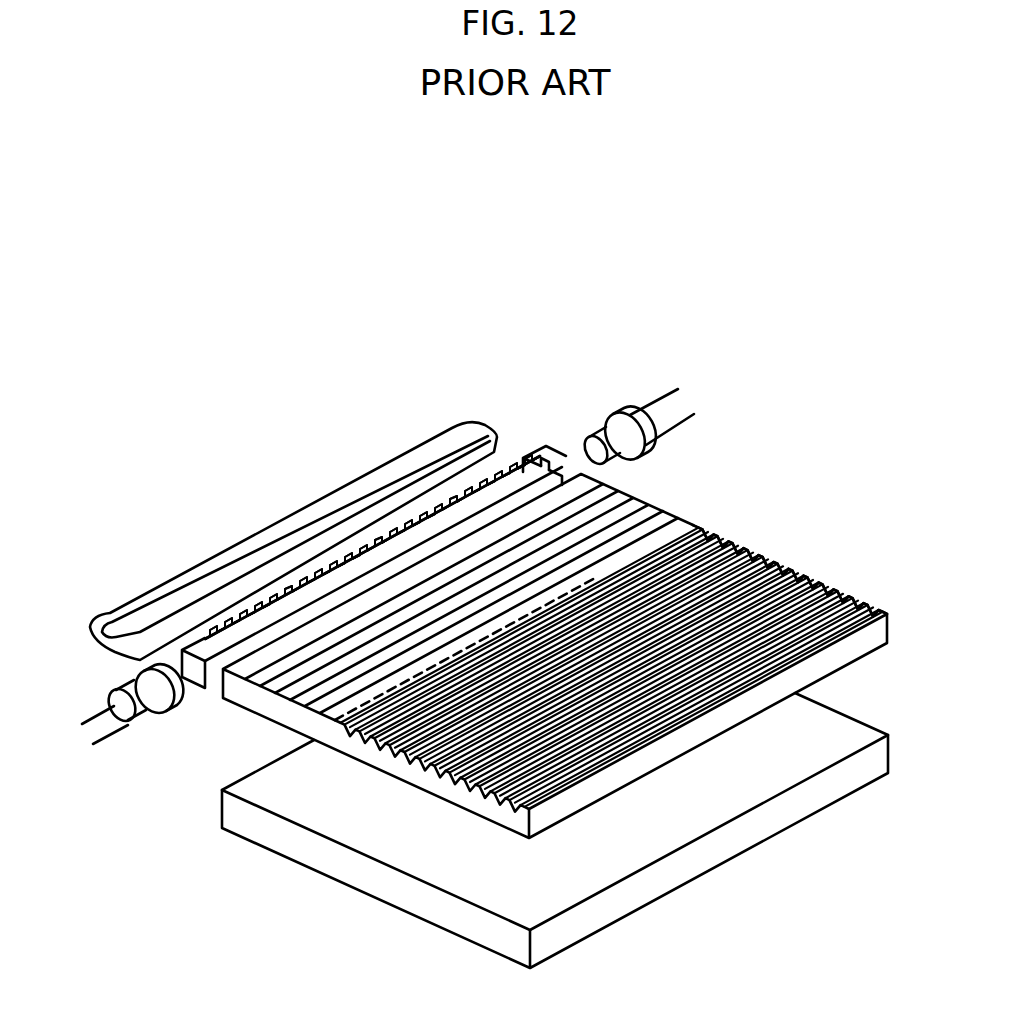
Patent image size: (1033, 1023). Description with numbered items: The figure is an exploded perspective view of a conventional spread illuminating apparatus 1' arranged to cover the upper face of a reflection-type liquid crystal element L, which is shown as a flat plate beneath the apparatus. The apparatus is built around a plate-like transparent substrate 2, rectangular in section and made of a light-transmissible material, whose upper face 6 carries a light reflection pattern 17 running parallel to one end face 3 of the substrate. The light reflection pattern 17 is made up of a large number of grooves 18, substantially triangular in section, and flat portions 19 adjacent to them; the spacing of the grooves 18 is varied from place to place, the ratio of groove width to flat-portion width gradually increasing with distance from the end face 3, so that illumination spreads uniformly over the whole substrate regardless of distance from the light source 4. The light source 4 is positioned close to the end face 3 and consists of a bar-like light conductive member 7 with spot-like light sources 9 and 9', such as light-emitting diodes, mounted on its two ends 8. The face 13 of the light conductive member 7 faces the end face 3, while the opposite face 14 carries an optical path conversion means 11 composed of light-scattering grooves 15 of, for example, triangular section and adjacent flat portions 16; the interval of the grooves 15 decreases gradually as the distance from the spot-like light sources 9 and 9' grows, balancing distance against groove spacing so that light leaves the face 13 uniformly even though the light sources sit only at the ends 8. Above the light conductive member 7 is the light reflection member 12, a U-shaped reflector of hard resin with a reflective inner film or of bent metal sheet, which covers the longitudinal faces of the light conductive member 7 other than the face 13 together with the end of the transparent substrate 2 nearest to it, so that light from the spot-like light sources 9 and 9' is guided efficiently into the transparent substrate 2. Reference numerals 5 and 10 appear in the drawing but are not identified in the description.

The spread illuminating apparatus 1' is at (688, 360).
The transparent substrate 2 is at (475, 799).
The end face 3 is at (212, 676).
The light source 4 is at (478, 300).
The groove region 5 is at (378, 766).
The upper face 6 is at (667, 558).
The light conductive member 7 is at (552, 460).
The ends 8 is at (190, 685).
The spot-like light source 9 is at (611, 384).
The spot-like light source 9' is at (106, 674).
The upper surface of base 10 is at (698, 730).
The optical path conversion means 11 is at (372, 352).
The light reflection member 12 is at (176, 598).
The face 13 is at (297, 624).
The face 14 is at (455, 512).
The grooves 15 is at (333, 575).
The flat portions 16 is at (390, 550).
The light reflection pattern 17 is at (895, 445).
The grooves 18 is at (785, 598).
The flat portions 19 is at (844, 603).
The reflection-type liquid crystal element L is at (652, 887).